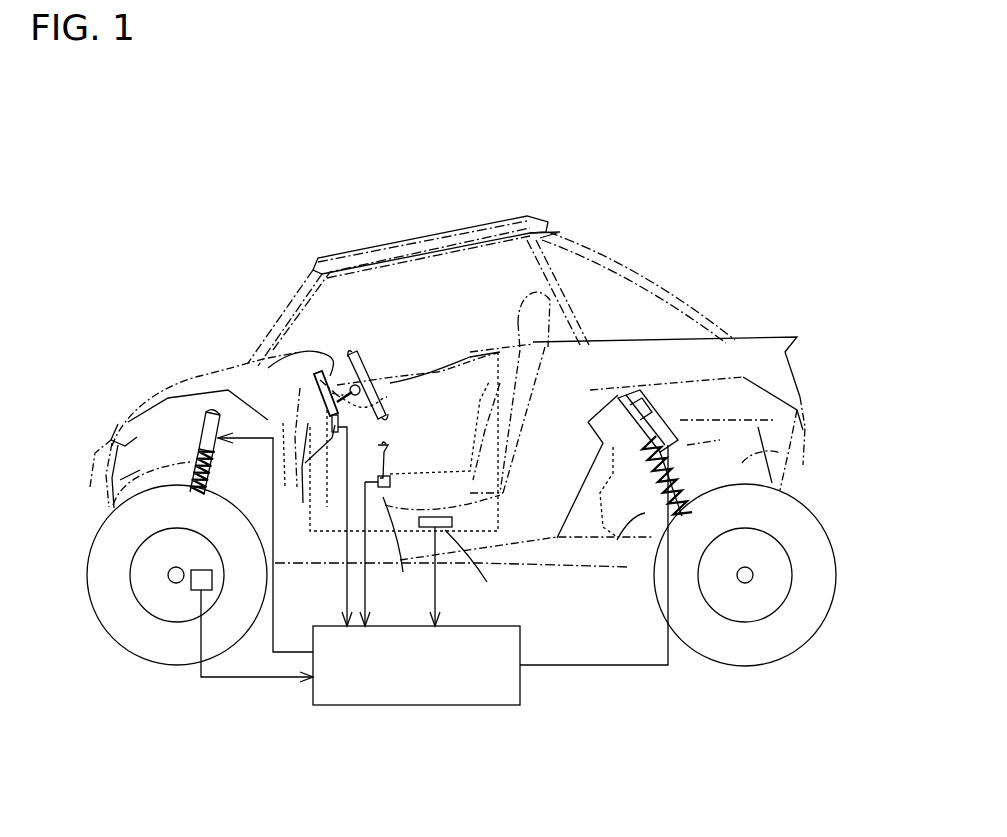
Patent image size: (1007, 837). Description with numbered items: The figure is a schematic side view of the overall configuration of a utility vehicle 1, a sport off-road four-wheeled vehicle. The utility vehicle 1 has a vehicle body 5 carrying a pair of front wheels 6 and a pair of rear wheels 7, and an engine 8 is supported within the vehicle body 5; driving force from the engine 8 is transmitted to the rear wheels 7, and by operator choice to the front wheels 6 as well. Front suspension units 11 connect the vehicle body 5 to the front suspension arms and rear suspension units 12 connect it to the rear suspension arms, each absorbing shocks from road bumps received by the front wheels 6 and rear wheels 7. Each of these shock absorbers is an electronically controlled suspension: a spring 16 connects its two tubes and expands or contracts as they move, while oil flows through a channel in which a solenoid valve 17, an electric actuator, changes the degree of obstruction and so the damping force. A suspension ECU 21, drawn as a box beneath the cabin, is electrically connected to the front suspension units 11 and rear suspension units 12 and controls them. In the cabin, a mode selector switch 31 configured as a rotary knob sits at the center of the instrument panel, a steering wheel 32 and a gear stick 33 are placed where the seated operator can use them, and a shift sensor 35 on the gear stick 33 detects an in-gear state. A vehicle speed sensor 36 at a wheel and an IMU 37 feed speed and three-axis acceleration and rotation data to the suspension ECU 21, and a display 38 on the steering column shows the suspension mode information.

The utility vehicle 1 is at (140, 190).
The vehicle body 5 is at (465, 228).
The front wheels 6 is at (188, 650).
The rear wheels 7 is at (753, 652).
The engine 8 is at (780, 453).
The front suspension units 11 is at (170, 447).
The rear suspension units 12 is at (687, 445).
The spring 16 is at (115, 503).
The solenoid valve 17 is at (193, 428).
The suspension ECU 21 is at (435, 705).
The mode selector switch 31 is at (395, 386).
The steering wheel 32 is at (366, 372).
The gear stick 33 is at (390, 452).
The shift sensor 35 is at (385, 560).
The vehicle speed sensor 36 is at (190, 588).
The IMU 37 is at (465, 527).
The display 38 is at (317, 370).